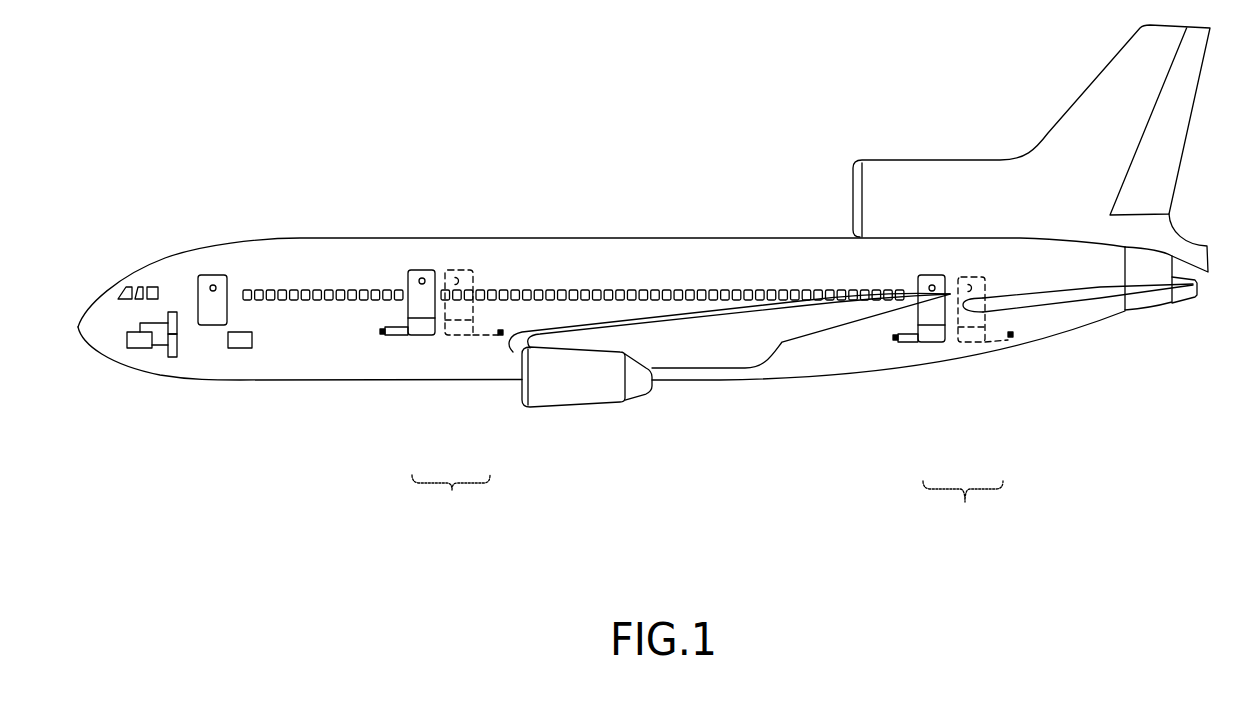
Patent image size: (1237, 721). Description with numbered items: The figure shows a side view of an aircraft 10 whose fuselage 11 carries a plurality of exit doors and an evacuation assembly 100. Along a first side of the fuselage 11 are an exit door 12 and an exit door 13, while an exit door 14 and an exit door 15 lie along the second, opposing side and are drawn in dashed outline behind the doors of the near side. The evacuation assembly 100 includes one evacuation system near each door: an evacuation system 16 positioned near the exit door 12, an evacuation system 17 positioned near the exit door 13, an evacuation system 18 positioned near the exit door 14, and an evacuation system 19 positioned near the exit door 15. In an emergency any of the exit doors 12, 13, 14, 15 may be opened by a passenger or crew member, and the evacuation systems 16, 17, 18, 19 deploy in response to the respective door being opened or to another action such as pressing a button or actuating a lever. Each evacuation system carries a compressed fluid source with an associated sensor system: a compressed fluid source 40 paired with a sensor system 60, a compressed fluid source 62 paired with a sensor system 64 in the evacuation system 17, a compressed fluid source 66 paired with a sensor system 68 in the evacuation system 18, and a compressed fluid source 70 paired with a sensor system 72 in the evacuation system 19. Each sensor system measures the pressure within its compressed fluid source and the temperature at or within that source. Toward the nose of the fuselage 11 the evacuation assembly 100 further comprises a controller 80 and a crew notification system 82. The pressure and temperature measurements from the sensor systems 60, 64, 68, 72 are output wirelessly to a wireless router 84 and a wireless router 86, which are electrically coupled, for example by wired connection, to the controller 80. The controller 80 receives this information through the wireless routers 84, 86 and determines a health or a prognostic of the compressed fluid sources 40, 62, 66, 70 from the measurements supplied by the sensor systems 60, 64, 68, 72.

The aircraft 10 is at (313, 152).
The fuselage 11 is at (243, 248).
The exit door 12 is at (413, 270).
The exit door 13 is at (935, 275).
The exit door 14 is at (468, 270).
The exit door 15 is at (975, 277).
The evacuation system 16 is at (417, 336).
The evacuation system 17 is at (928, 343).
The evacuation system 18 is at (460, 336).
The evacuation system 19 is at (976, 343).
The compressed fluid source 40 is at (402, 336).
The sensor system 60 is at (380, 334).
The compressed fluid source 62 is at (907, 343).
The sensor system 64 is at (896, 339).
The compressed fluid source 66 is at (487, 337).
The sensor system 68 is at (501, 336).
The compressed fluid source 70 is at (994, 343).
The sensor system 72 is at (1014, 337).
The controller 80 is at (128, 345).
The crew notification system 82 is at (237, 344).
The wireless router 84 is at (176, 316).
The wireless router 86 is at (172, 353).
The evacuation assembly 100 is at (452, 492).